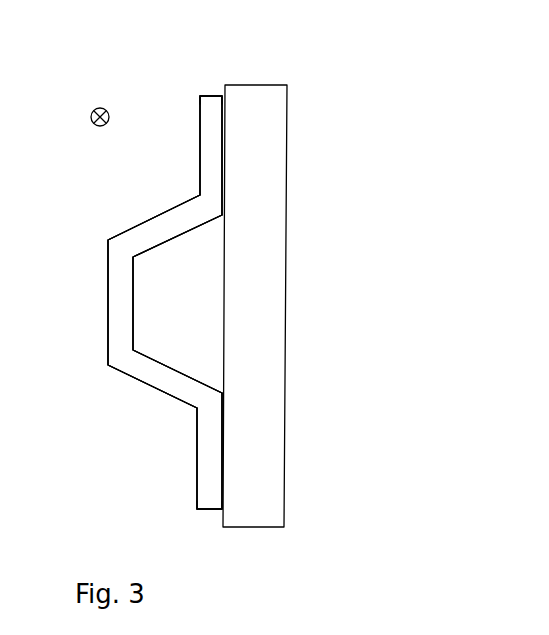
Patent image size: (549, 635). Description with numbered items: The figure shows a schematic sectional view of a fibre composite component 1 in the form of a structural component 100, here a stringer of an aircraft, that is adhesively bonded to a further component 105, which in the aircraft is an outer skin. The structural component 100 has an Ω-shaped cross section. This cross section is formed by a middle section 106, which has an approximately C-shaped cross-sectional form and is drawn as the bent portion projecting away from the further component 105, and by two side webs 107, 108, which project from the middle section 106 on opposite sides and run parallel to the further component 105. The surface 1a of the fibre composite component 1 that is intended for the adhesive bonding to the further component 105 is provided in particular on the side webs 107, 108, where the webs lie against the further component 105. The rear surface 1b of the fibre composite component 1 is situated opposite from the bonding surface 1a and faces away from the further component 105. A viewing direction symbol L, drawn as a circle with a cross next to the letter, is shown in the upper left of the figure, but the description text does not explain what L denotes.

The fibre composite component 1 is at (96, 471).
The structural component 100 is at (96, 471).
The surface 1a is at (225, 175).
The rear surface 1b is at (194, 174).
The further component 105 is at (277, 118).
The middle section 106 is at (96, 350).
The side web 107 is at (205, 505).
The side web 108 is at (208, 100).
The longitudinal direction L is at (102, 104).